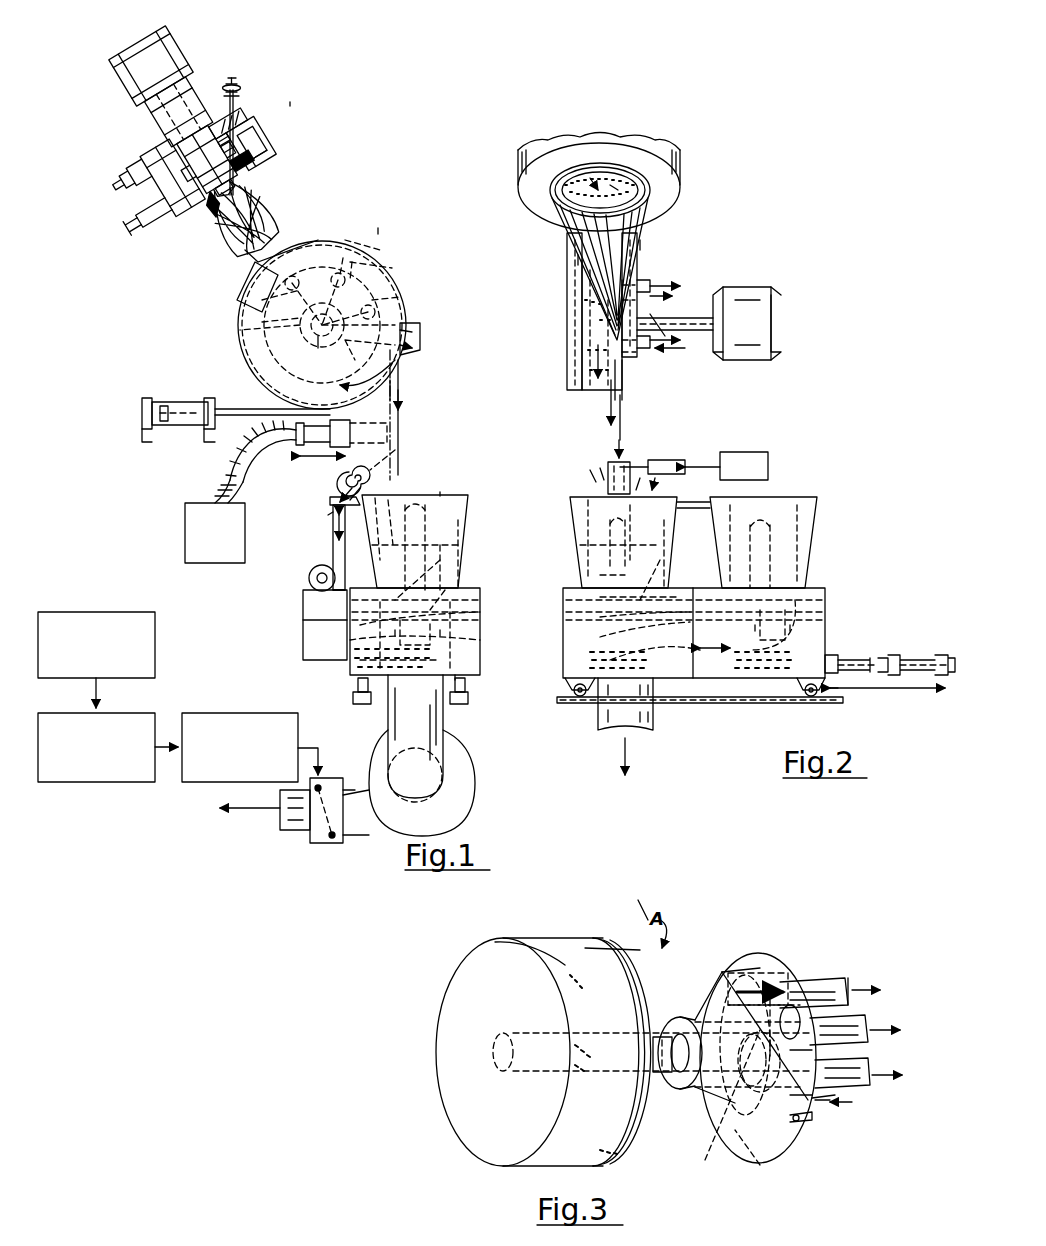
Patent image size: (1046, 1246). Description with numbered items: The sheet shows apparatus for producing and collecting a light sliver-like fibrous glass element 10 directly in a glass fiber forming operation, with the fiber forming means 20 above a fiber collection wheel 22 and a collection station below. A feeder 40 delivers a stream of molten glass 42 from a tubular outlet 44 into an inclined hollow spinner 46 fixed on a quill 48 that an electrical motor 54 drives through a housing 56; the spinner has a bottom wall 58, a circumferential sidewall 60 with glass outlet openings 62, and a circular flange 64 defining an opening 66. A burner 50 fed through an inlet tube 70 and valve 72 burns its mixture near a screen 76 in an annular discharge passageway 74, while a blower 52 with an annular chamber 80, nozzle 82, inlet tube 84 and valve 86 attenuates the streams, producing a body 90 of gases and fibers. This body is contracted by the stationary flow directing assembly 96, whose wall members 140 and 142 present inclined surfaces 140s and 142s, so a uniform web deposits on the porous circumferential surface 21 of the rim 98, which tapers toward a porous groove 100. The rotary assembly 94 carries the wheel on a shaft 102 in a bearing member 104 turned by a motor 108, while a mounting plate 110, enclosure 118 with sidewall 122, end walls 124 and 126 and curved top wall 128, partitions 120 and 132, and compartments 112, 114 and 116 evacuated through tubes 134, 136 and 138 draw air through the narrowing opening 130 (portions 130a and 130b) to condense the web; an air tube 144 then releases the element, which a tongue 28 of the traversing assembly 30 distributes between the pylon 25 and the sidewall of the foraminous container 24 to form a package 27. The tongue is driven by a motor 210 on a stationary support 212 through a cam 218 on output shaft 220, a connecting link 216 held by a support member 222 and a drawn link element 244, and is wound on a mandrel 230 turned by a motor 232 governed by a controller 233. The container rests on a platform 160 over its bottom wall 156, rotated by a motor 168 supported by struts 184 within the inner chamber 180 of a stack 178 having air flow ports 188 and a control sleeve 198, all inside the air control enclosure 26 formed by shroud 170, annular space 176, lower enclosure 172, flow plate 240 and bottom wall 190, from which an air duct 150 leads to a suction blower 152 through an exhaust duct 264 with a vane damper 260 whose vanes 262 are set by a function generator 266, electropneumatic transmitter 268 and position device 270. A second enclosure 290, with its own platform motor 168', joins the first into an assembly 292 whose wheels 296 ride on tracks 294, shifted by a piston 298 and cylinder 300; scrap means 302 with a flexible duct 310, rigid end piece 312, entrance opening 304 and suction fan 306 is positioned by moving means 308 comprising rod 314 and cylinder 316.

In FIG. 1, the fibrous glass element 10 is at (396, 364).
In FIG. 2, the fibrous glass element 10 is at (626, 396).
In FIG. 1, the rotary fiber forming means 20 is at (275, 88).
In FIG. 2, the rotary fiber forming means 20 is at (660, 153).
In FIG. 2, the porous circumferential surface 21 is at (592, 294).
In FIG. 3, the porous circumferential surface 21 is at (507, 950).
In FIG. 1, the fiber collection wheel 22 is at (288, 321).
In FIG. 2, the fiber collection wheel 22 is at (578, 352).
In FIG. 3, the fiber collection wheel 22 is at (460, 978).
In FIG. 1, the foraminous container 24 is at (462, 500).
In FIG. 2, the foraminous container 24 is at (574, 513).
In FIG. 1, the pylon 25 is at (440, 490).
In FIG. 2, the pylon 25 is at (634, 513).
In FIG. 1, the air control enclosure 26 is at (452, 538).
In FIG. 2, the air control enclosure 26 is at (570, 481).
In FIG. 1, the package 27 is at (423, 514).
In FIG. 2, the package 27 is at (590, 550).
In FIG. 1, the tongue 28 is at (368, 472).
In FIG. 2, the tongue 28 is at (615, 532).
In FIG. 1, the traversing assembly 30 is at (320, 535).
In FIG. 1, the feeder 40 is at (235, 84).
In FIG. 1, the stream of molten glass 42 is at (230, 92).
In FIG. 1, the tubular outlet 44 is at (235, 98).
In FIG. 1, the spinner 46 is at (198, 233).
In FIG. 2, the spinner 46 is at (555, 192).
In FIG. 1, the quill 48 is at (165, 155).
In FIG. 1, the burner 50 is at (286, 101).
In FIG. 1, the blower 52 is at (296, 124).
In FIG. 1, the electrical motor 54 is at (136, 53).
In FIG. 1, the housing 56 is at (147, 111).
In FIG. 1, the bottom wall 58 is at (255, 156).
In FIG. 2, the bottom wall 58 is at (580, 195).
In FIG. 1, the circumferential sidewall 60 is at (199, 219).
In FIG. 2, the circumferential sidewall 60 is at (615, 182).
In FIG. 1, the glass outlet openings 62 is at (220, 226).
In FIG. 2, the glass outlet openings 62 is at (593, 180).
In FIG. 1, the circular flange 64 is at (295, 153).
In FIG. 1, the opening 66 is at (275, 176).
In FIG. 1, the inlet tube 70 is at (84, 169).
In FIG. 1, the valve 72 is at (129, 166).
In FIG. 1, the annular discharge passageway 74 is at (279, 142).
In FIG. 1, the screen 76 is at (246, 105).
In FIG. 1, the annular chamber 80 is at (288, 107).
In FIG. 1, the air outlet nozzle 82 is at (286, 133).
In FIG. 1, the inlet tube 84 is at (104, 239).
In FIG. 1, the valve 86 is at (115, 213).
In FIG. 1, the body of gases and fibers 90 is at (263, 205).
In FIG. 2, the body of gases and fibers 90 is at (633, 212).
In FIG. 3, the rotary assembly 94 is at (678, 937).
In FIG. 1, the stationary flow directing assembly 96 is at (382, 230).
In FIG. 3, the peripheral wall 98 is at (629, 1138).
In FIG. 3, the porous groove 100 is at (625, 948).
In FIG. 1, the shaft 102 is at (315, 348).
In FIG. 2, the shaft 102 is at (688, 308).
In FIG. 3, the shaft 102 is at (645, 1088).
In FIG. 3, the bearing member 104 is at (655, 1090).
In FIG. 2, the motor 108 is at (760, 286).
In FIG. 3, the circular mounting plate 110 is at (803, 1142).
In FIG. 1, the compartment 112 is at (255, 305).
In FIG. 1, the compartment 114 is at (352, 260).
In FIG. 3, the compartment 114 is at (816, 988).
In FIG. 1, the compartment 116 is at (393, 266).
In FIG. 3, the compartment 116 is at (836, 1071).
In FIG. 3, the enclosure 118 is at (720, 1137).
In FIG. 1, the partition 120 is at (378, 248).
In FIG. 3, the partition 120 is at (843, 1045).
In FIG. 3, the sidewall 122 is at (710, 992).
In FIG. 1, the end wall 124 is at (405, 323).
In FIG. 3, the end wall 124 is at (719, 1152).
In FIG. 1, the end wall 126 is at (262, 346).
In FIG. 3, the end wall 126 is at (802, 984).
In FIG. 3, the curved top wall 128 is at (759, 983).
In FIG. 3, the circumferential opening 130 is at (851, 978).
In FIG. 3, the narrowing portion 130a is at (750, 983).
In FIG. 3, the constant width portion 130b is at (833, 1090).
In FIG. 1, the partition 132 is at (262, 324).
In FIG. 3, the partition 132 is at (705, 987).
In FIG. 1, the tube 134 is at (238, 278).
In FIG. 2, the tube 134 is at (643, 294).
In FIG. 3, the tube 134 is at (795, 982).
In FIG. 1, the tube 136 is at (393, 254).
In FIG. 2, the tube 136 is at (636, 284).
In FIG. 3, the tube 136 is at (843, 1008).
In FIG. 1, the tube 138 is at (405, 282).
In FIG. 2, the tube 138 is at (638, 354).
In FIG. 3, the tube 138 is at (853, 1084).
In FIG. 2, the flow director element 140 is at (638, 254).
In FIG. 2, the flow control surface 140s is at (645, 234).
In FIG. 1, the flow director element 142 is at (410, 302).
In FIG. 2, the flow director element 142 is at (568, 278).
In FIG. 2, the flow control surface 142s is at (565, 264).
In FIG. 1, the air tube 144 is at (355, 342).
In FIG. 2, the air tube 144 is at (641, 340).
In FIG. 3, the air tube 144 is at (793, 1127).
In FIG. 1, the air duct 150 is at (463, 732).
In FIG. 2, the air duct 150 is at (597, 730).
In FIG. 1, the suction blower 152 is at (471, 776).
In FIG. 1, the bottom wall 156 is at (438, 568).
In FIG. 2, the bottom wall 156 is at (588, 574).
In FIG. 1, the platform 160 is at (352, 612).
In FIG. 2, the platform 160 is at (664, 560).
In FIG. 1, the motor 168 is at (466, 630).
In FIG. 2, the motor 168 is at (611, 634).
In FIG. 2, the screen 168' is at (812, 605).
In FIG. 1, the shroud 170 is at (445, 525).
In FIG. 2, the shroud 170 is at (588, 525).
In FIG. 1, the lower enclosure 172 is at (352, 671).
In FIG. 2, the lower enclosure 172 is at (583, 655).
In FIG. 1, the annular space 176 is at (458, 503).
In FIG. 1, the stack 178 is at (350, 635).
In FIG. 2, the stack 178 is at (760, 615).
In FIG. 2, the inner chamber 180 is at (651, 597).
In FIG. 1, the struts 184 is at (482, 606).
In FIG. 2, the struts 184 is at (600, 617).
In FIG. 1, the air flow ports 188 is at (482, 668).
In FIG. 2, the air flow ports 188 is at (760, 668).
In FIG. 1, the bottom wall 190 is at (485, 688).
In FIG. 1, the air control sleeve 198 is at (482, 648).
In FIG. 2, the air control sleeve 198 is at (780, 627).
In FIG. 1, the motor 210 is at (316, 583).
In FIG. 1, the stationary support 212 is at (303, 620).
In FIG. 1, the connecting link 216 is at (348, 495).
In FIG. 1, the cam 218 is at (320, 575).
In FIG. 1, the output shaft 220 is at (317, 580).
In FIG. 1, the support member 222 is at (330, 500).
In FIG. 1, the mandrel 230 is at (396, 448).
In FIG. 2, the motor 232 is at (672, 440).
In FIG. 2, the motor controller 233 is at (732, 452).
In FIG. 1, the air resistance flow plate 240 is at (443, 590).
In FIG. 2, the air resistance flow plate 240 is at (600, 597).
In FIG. 1, the cable 244 is at (326, 550).
In FIG. 1, the air flow valve 260 is at (308, 840).
In FIG. 1, the vanes 262 is at (346, 850).
In FIG. 1, the exhaust duct 264 is at (320, 797).
In FIG. 1, the function generator 266 is at (42, 612).
In FIG. 1, the electropneumatic transmitter 268 is at (48, 782).
In FIG. 1, the pneumatic position device 270 is at (196, 782).
In FIG. 2, the air control enclosure 290 is at (793, 492).
In FIG. 2, the assembly 292 is at (823, 507).
In FIG. 1, the tracks 294 is at (357, 710).
In FIG. 2, the tracks 294 is at (685, 706).
In FIG. 1, the wheels 296 is at (358, 697).
In FIG. 2, the wheels 296 is at (548, 685).
In FIG. 2, the piston 298 is at (853, 657).
In FIG. 2, the cylinder 300 is at (945, 620).
In FIG. 1, the suction guide passageway means 302 is at (260, 441).
In FIG. 1, the entrance opening 304 is at (372, 427).
In FIG. 1, the suction fan 306 is at (184, 525).
In FIG. 1, the moving means 308 is at (144, 396).
In FIG. 1, the flexible duct 310 is at (215, 470).
In FIG. 1, the rigid end piece 312 is at (327, 420).
In FIG. 1, the rod 314 is at (268, 410).
In FIG. 1, the cylinder 316 is at (175, 400).